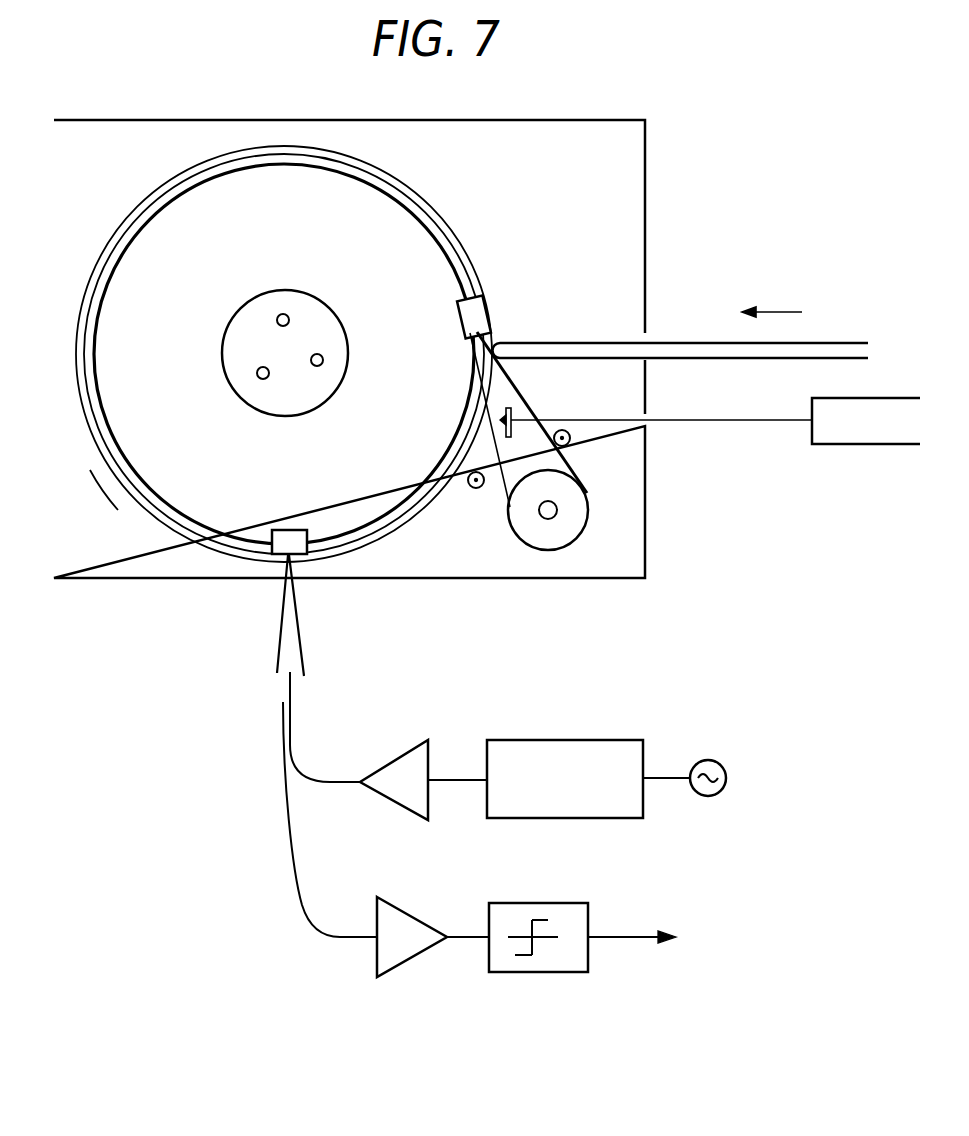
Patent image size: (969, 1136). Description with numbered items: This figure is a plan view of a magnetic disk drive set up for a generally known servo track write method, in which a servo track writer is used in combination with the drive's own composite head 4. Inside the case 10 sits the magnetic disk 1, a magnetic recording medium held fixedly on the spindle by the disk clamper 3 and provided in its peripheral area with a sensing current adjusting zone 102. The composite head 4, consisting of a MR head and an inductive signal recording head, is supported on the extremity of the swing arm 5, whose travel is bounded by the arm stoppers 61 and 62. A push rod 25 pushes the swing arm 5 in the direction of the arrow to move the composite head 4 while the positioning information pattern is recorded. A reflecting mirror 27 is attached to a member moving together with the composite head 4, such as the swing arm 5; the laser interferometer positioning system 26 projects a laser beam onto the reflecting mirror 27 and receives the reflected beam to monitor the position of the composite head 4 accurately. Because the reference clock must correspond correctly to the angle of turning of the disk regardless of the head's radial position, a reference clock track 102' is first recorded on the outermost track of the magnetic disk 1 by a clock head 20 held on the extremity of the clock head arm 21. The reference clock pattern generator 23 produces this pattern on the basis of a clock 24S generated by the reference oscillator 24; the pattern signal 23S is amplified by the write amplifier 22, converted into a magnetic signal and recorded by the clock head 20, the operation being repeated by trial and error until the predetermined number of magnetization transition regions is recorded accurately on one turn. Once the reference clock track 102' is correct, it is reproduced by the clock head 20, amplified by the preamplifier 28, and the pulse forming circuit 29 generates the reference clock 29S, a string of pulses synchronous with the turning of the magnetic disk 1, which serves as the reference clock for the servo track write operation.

The magnetic disk 1 is at (437, 210).
The sensing current adjusting zone 102 is at (284, 353).
The reference clock track 102' is at (100, 500).
The disk clamper 3 is at (340, 318).
The composite head 4 is at (455, 325).
The swing arm 5 is at (527, 393).
The housing 10 is at (645, 185).
The clock head 20 is at (290, 530).
The clock head arm 21 is at (303, 640).
The write amplifier 22 is at (395, 760).
The reference clock pattern generator 23 is at (600, 740).
The pattern signal 23S is at (458, 782).
The reference oscillator 24 is at (722, 766).
The clock 24S is at (672, 780).
The push rod 25 is at (671, 343).
The laser interferometer positioning system 26 is at (832, 444).
The reflecting mirror 27 is at (512, 413).
The preamplifier 28 is at (410, 912).
The pulse forming circuit 29 is at (550, 903).
The reference clock 29S is at (645, 937).
The arm stopper 61 is at (570, 440).
The arm stopper 62 is at (474, 489).